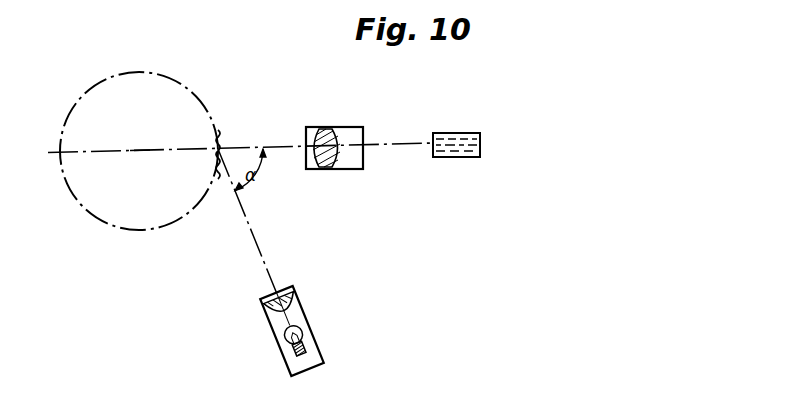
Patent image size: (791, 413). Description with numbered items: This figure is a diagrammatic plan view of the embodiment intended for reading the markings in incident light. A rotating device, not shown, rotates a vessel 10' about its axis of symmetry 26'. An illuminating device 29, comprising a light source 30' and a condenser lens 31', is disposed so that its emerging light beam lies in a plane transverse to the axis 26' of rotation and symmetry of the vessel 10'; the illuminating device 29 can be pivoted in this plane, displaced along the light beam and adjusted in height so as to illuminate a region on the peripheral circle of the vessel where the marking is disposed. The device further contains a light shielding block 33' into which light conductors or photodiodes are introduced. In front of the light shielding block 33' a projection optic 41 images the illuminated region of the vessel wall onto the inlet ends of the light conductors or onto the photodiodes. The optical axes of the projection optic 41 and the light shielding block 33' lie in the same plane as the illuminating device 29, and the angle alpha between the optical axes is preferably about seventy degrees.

The vessel 10' is at (139, 165).
The axis of symmetry 26' is at (151, 128).
The projection optic 41 is at (330, 127).
The light shielding block 33' is at (457, 128).
The illuminating device 29 is at (310, 314).
The condenser lens 31' is at (257, 303).
The light source 30' is at (271, 348).